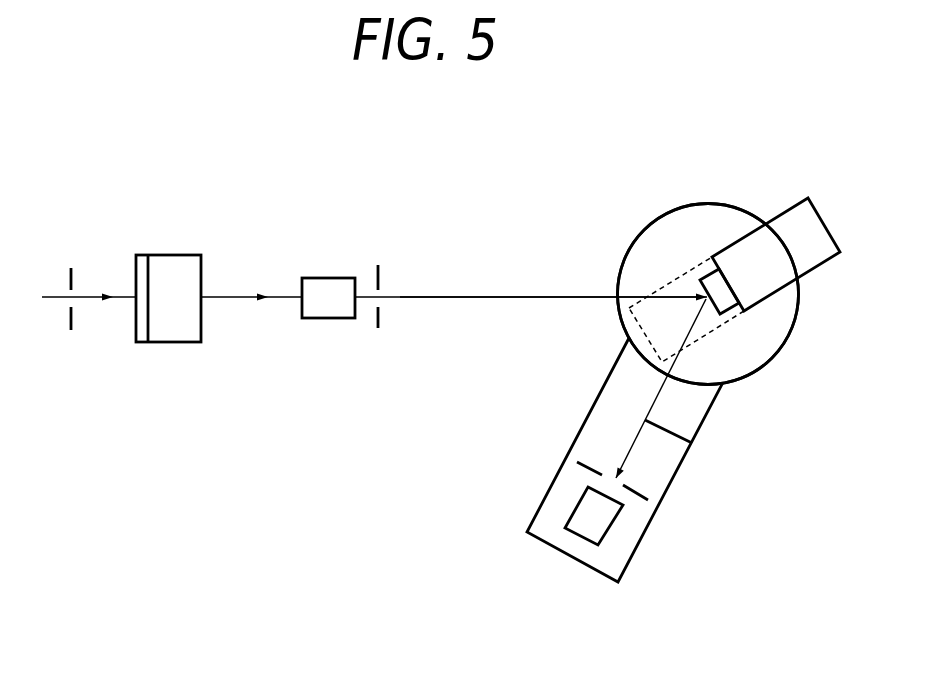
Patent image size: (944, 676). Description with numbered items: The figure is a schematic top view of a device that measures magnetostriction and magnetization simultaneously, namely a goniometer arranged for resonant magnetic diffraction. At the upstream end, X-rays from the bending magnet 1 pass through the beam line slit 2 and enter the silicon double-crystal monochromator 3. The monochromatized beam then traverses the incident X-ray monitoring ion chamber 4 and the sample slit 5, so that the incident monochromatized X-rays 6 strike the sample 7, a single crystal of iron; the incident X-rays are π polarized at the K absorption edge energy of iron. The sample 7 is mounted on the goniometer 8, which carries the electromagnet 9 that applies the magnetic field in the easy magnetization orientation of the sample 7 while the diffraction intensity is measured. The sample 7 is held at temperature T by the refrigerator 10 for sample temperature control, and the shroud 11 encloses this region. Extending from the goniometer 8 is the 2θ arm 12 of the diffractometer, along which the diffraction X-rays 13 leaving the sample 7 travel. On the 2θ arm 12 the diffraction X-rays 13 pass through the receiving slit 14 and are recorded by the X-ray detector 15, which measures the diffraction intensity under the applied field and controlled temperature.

The bending magnet 1 is at (53, 297).
The beam line slit 2 is at (71, 322).
The silicon double-crystal monochromator 3 is at (172, 255).
The incident X-ray monitoring ion chamber 4 is at (330, 278).
The sample slit 5 is at (378, 277).
The incident monochromatized X-rays 6 is at (540, 295).
The sample 7 is at (709, 263).
The goniometer 8 is at (682, 195).
The electromagnet 9 is at (713, 202).
The refrigerator 10 is at (797, 215).
The shroud 11 is at (718, 327).
The 2θ arm 12 is at (590, 410).
The diffraction X-rays 13 is at (692, 443).
The receiving slit 14 is at (585, 468).
The X-ray detector 15 is at (580, 542).